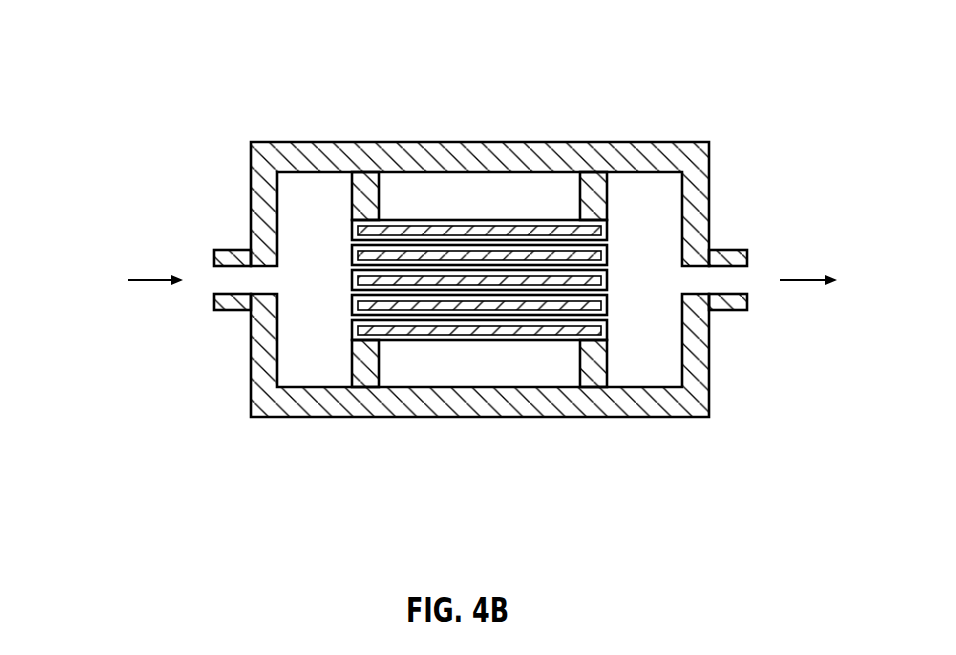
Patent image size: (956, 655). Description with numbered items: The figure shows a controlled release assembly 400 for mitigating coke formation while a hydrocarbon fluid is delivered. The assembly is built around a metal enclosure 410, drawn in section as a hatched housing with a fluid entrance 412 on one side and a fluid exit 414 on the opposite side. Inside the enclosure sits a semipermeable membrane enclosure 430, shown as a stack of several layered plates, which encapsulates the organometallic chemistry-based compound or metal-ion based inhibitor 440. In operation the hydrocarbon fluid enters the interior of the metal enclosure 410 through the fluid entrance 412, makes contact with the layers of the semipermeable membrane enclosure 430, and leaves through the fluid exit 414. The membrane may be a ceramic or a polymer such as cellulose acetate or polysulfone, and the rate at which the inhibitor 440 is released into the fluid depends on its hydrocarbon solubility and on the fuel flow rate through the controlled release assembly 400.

The controlled release assembly 400 is at (143, 77).
The metal enclosure 410 is at (556, 103).
The fluid entrance 412 is at (215, 228).
The fluid exit 414 is at (744, 228).
The semipermeable membrane enclosure 430 is at (543, 363).
The organometallic chemistry-based compound or M n+ based inhibitor 440 is at (416, 343).